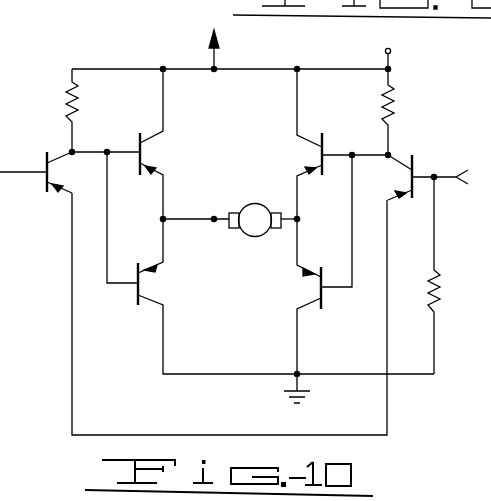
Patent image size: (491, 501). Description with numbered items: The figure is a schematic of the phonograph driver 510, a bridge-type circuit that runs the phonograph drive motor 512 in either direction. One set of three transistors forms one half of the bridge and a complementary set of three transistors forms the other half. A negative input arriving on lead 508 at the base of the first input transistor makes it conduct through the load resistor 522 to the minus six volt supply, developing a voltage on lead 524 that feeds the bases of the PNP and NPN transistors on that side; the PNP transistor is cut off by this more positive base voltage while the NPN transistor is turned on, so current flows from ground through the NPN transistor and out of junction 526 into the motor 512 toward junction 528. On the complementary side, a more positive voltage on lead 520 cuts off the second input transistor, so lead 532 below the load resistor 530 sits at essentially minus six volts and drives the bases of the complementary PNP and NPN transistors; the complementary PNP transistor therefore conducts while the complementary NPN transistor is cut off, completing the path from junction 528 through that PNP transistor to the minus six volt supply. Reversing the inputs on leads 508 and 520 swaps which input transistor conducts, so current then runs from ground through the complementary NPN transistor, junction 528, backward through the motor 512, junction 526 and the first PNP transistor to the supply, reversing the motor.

The phonograph driver 510 is at (112, 28).
The load resistor 530 is at (83, 103).
The lead 532 is at (86, 150).
The lead 520 is at (5, 163).
The junction 528 is at (166, 217).
The phonograph drive motor 512 is at (265, 185).
The junction 526 is at (299, 225).
The lead 524 is at (362, 136).
The load resistor 522 is at (401, 113).
The lead 508 is at (461, 170).